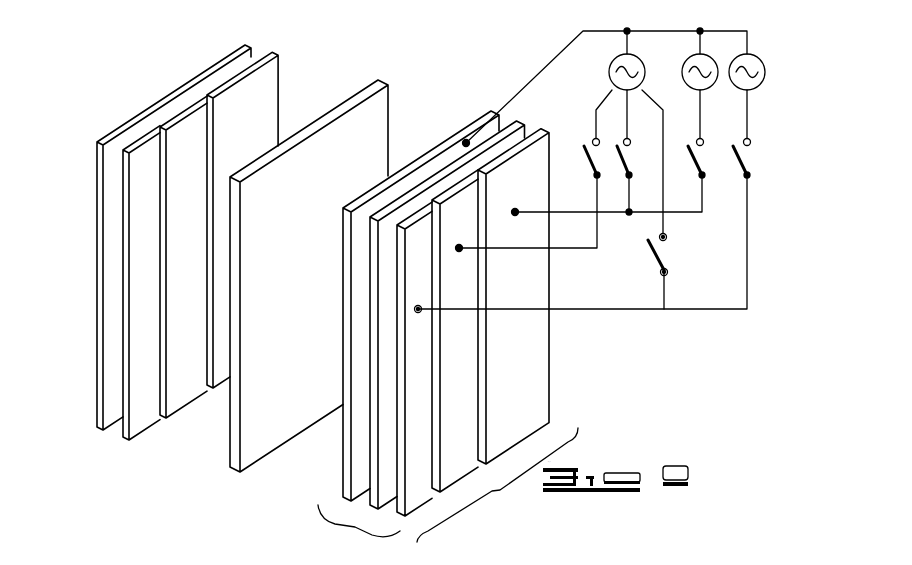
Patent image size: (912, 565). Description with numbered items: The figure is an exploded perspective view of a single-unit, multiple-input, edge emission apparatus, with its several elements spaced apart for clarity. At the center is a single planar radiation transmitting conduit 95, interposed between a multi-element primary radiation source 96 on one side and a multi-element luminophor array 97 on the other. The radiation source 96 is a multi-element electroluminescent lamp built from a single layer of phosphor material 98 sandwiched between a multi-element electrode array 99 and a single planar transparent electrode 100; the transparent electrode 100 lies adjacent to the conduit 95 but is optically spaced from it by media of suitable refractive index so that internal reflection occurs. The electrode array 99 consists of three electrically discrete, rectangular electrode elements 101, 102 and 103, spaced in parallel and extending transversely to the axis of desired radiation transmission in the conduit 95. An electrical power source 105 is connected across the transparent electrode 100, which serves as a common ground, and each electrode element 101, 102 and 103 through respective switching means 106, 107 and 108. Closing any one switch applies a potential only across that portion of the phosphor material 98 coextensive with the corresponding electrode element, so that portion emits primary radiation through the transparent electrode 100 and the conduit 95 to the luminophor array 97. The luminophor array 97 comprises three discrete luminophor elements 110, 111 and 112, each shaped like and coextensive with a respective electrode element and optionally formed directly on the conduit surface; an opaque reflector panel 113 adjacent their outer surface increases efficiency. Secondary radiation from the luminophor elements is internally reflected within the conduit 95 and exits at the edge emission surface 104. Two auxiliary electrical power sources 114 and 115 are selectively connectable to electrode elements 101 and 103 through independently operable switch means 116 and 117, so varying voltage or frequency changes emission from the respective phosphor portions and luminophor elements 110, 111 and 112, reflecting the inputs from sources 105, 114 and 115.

The radiation transmitting conduit 95 is at (405, 100).
The multi-element primary radiation source 96 is at (359, 528).
The multi-element luminophor array 97 is at (120, 450).
The layer of phosphor material 98 is at (387, 436).
The multi-element electrode array 99 is at (497, 485).
The transparent electrode 100 is at (347, 460).
The electrode element 101 is at (418, 494).
The electrode element 102 is at (463, 458).
The electrode element 103 is at (540, 387).
The edge emission surface 104 is at (237, 450).
The electrical power source 105 is at (609, 63).
The switching means 106 is at (660, 255).
The switching means 107 is at (582, 157).
The switching means 108 is at (633, 162).
The luminophor element 110 is at (150, 420).
The luminophor element 111 is at (183, 134).
The luminophor element 112 is at (270, 78).
The opaque reflector panel 113 is at (97, 178).
The auxiliary electrical power source 114 is at (680, 70).
The auxiliary electrical power source 115 is at (762, 63).
The switch means 116 is at (700, 157).
The switch means 117 is at (738, 163).